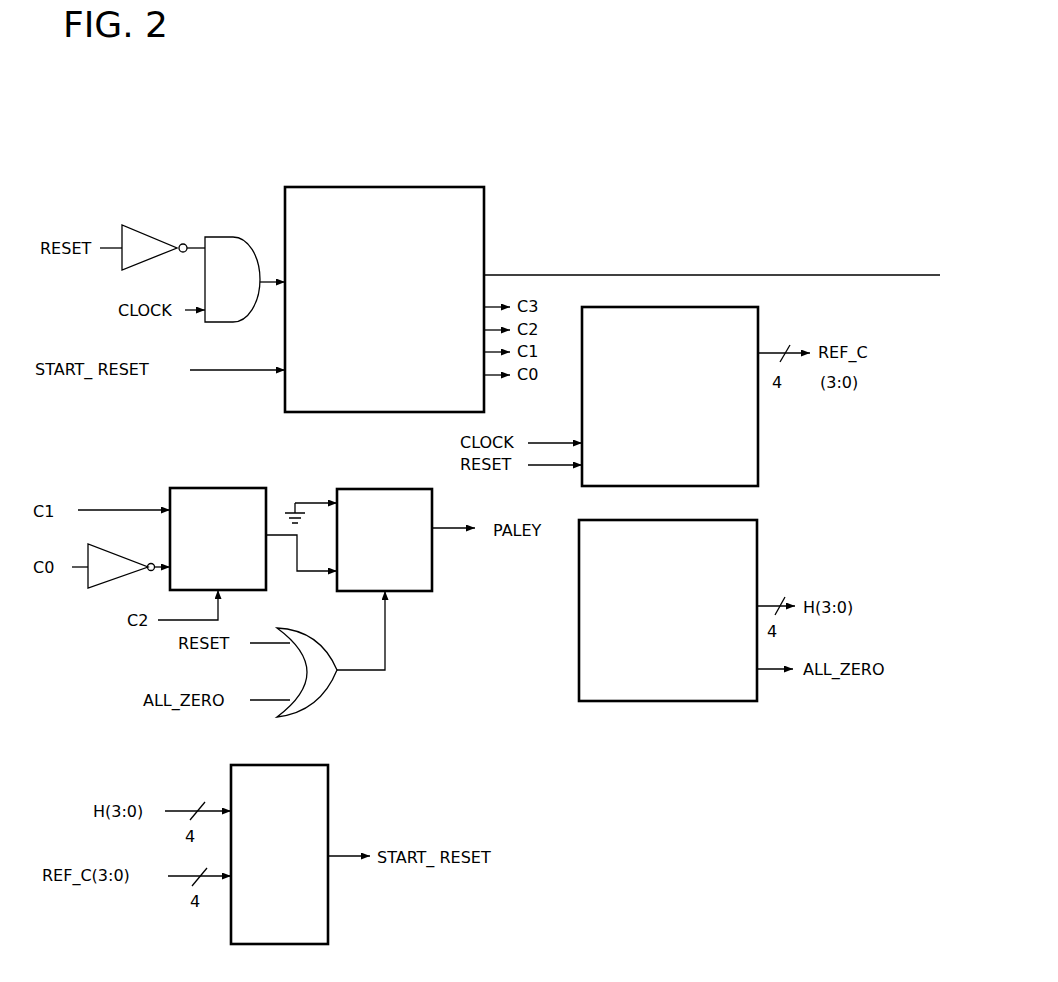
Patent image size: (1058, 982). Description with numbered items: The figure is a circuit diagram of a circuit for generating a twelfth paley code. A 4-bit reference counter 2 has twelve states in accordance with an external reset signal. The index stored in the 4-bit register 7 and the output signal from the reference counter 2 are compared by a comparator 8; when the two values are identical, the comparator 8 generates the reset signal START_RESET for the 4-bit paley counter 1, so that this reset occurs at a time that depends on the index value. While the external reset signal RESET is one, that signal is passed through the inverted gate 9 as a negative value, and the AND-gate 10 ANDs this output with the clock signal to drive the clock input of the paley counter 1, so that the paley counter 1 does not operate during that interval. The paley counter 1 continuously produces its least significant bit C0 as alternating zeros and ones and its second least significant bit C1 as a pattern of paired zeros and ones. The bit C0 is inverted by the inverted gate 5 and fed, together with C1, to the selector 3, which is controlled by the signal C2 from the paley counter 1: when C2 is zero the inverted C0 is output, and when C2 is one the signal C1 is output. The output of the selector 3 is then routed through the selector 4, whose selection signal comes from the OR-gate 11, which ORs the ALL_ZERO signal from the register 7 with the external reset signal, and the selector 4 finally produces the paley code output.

The 4-bit paley counter 1 is at (405, 187).
The 4-bit reference counter 2 is at (681, 307).
The selector 3 is at (218, 488).
The selector 4 is at (383, 489).
The inverted gate 5 is at (95, 588).
The 4-bit register 7 is at (760, 527).
The comparator 8 is at (330, 777).
The inverted gate 9 is at (146, 234).
The AND-gate 10 is at (235, 237).
The OR-gate 11 is at (332, 683).